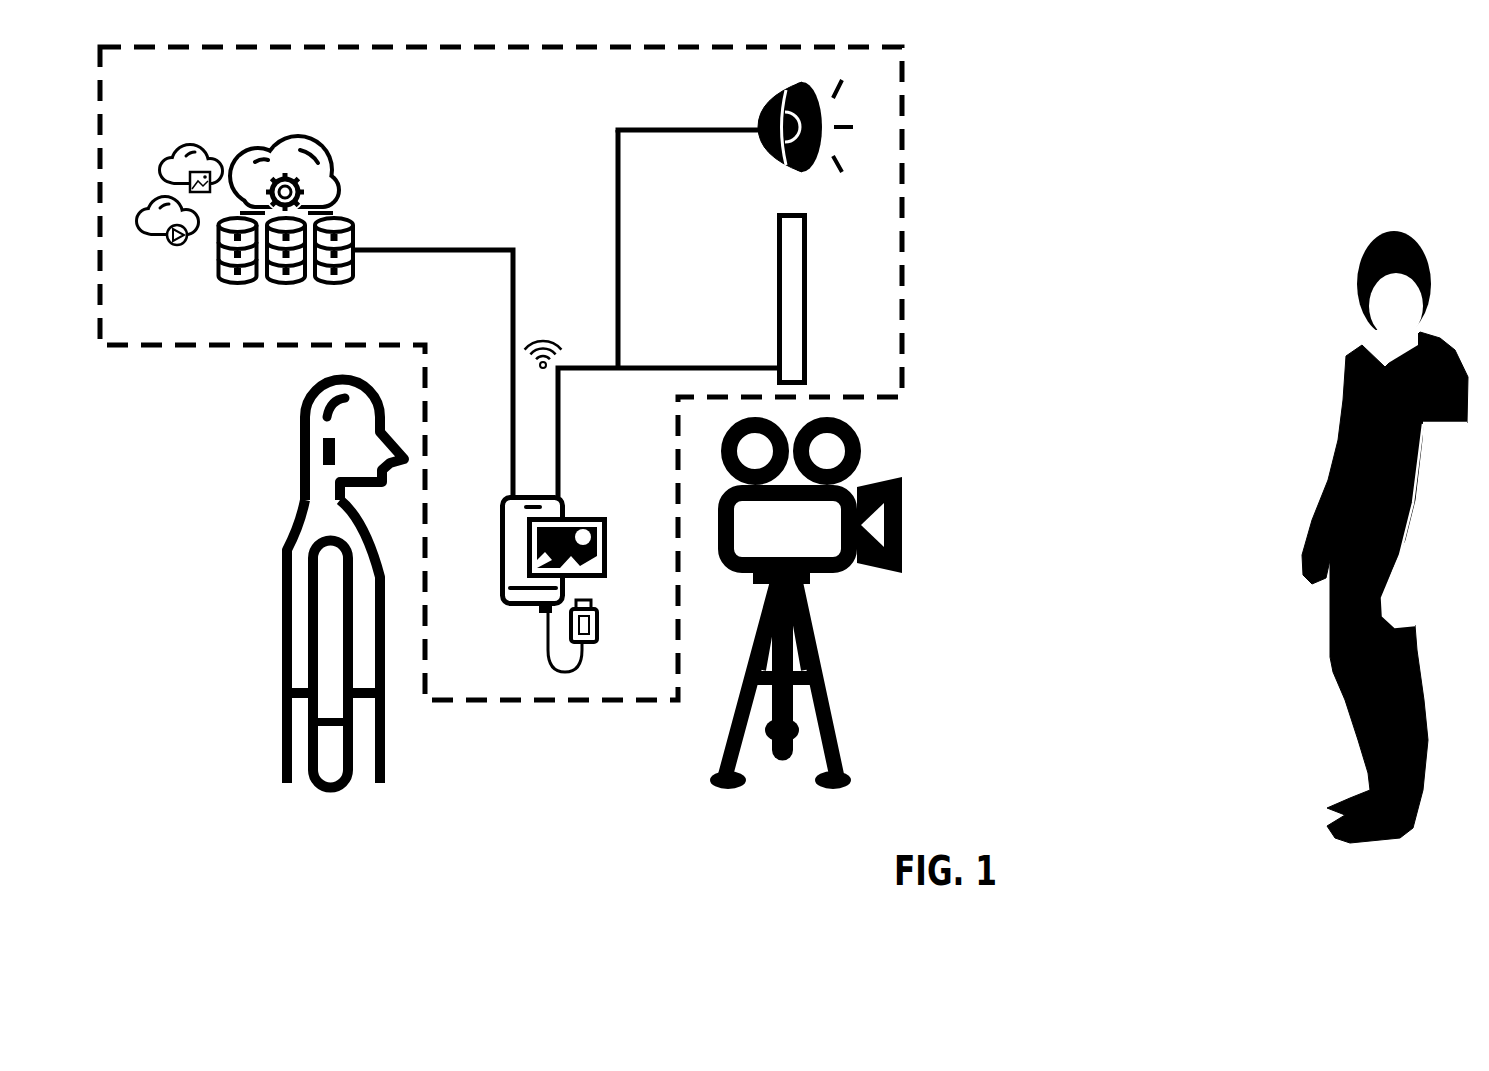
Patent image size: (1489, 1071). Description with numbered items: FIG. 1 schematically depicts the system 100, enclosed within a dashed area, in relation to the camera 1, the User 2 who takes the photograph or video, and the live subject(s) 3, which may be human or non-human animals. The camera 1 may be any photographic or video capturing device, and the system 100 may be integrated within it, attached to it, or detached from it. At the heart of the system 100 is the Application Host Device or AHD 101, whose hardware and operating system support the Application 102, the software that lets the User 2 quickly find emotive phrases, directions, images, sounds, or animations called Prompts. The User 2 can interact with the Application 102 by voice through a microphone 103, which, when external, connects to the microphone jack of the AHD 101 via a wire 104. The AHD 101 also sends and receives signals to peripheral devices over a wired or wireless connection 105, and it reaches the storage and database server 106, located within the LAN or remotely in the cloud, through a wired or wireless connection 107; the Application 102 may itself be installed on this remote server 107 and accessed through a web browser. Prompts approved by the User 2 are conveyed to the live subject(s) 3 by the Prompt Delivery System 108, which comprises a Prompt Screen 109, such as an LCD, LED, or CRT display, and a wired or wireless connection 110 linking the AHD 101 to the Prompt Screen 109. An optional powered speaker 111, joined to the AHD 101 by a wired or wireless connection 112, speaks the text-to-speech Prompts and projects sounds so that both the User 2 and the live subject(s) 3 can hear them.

The camera 1 is at (832, 710).
The User 2 is at (283, 551).
The live subject(s) 3 is at (1380, 235).
The system 100 is at (915, 124).
The Application Host Device (AHD) 101 is at (503, 605).
The Application 102 is at (503, 605).
The microphone 103 is at (587, 644).
The wire 104 is at (555, 672).
The wired or wireless connection 105 is at (544, 333).
The storage and database (server) 106 is at (228, 160).
The wired or wireless connection (remote server) 107 is at (450, 248).
The Prompt Delivery System (PDS) 108 is at (598, 155).
The Prompt Screen 109 is at (808, 321).
The wired or wireless connection 110 is at (735, 365).
The powered speaker 111 is at (766, 115).
The wired or wireless connection (speaker) 112 is at (616, 193).